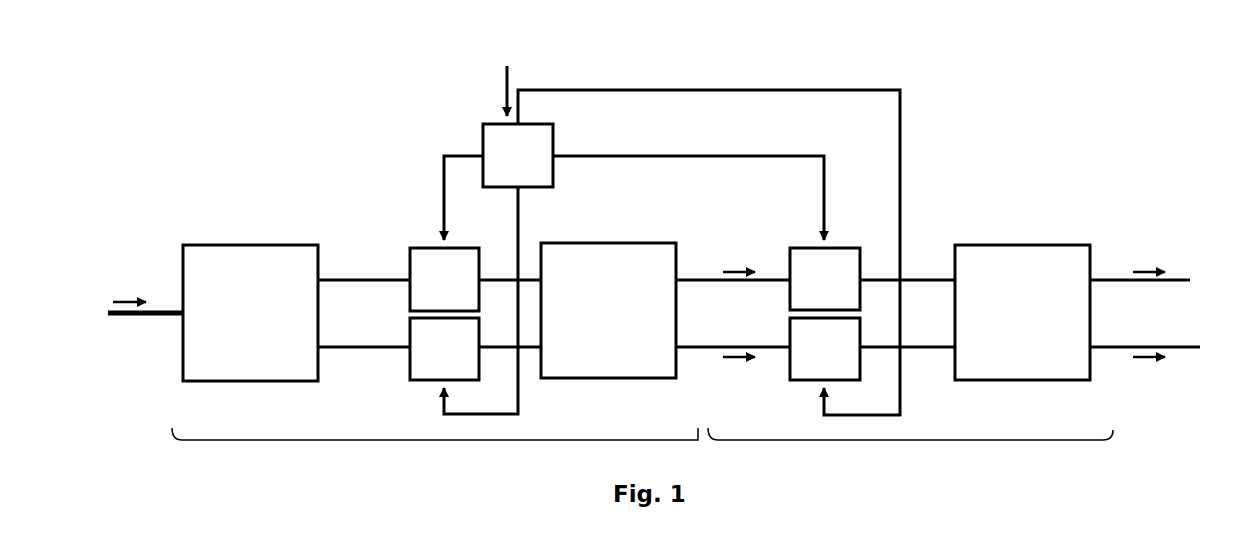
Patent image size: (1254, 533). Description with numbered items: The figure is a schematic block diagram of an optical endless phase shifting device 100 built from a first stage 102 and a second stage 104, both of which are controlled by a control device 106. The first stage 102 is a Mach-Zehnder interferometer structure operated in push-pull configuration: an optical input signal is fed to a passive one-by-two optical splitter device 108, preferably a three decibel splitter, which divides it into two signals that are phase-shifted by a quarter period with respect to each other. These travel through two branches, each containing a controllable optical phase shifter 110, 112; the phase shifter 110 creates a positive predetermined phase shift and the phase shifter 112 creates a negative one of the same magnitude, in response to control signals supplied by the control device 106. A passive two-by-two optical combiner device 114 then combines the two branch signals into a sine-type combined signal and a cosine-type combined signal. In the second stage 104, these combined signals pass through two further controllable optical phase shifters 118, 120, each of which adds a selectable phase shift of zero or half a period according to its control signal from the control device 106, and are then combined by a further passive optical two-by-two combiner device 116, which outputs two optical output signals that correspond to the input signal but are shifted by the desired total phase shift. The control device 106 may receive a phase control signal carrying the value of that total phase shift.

The optical endless phase shifting device 100 is at (958, 160).
The first stage 102 is at (434, 440).
The second stage 104 is at (910, 440).
The control device 106 is at (500, 135).
The passive 1×2 optical splitter device 108 is at (295, 257).
The controllable optical phase shifter 110 is at (420, 258).
The controllable optical phase shifter 112 is at (423, 367).
The passive 2×2 optical combiner device 114 is at (623, 257).
The passive optical 2×2 combiner device 116 is at (1012, 263).
The controllable optical phase shifter 118 is at (845, 258).
The controllable optical phase shifter 120 is at (800, 368).